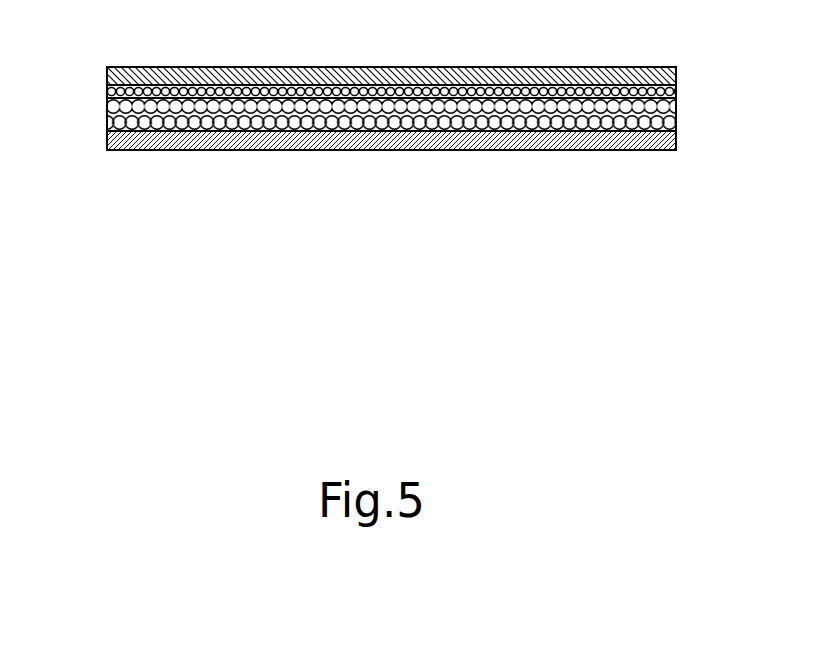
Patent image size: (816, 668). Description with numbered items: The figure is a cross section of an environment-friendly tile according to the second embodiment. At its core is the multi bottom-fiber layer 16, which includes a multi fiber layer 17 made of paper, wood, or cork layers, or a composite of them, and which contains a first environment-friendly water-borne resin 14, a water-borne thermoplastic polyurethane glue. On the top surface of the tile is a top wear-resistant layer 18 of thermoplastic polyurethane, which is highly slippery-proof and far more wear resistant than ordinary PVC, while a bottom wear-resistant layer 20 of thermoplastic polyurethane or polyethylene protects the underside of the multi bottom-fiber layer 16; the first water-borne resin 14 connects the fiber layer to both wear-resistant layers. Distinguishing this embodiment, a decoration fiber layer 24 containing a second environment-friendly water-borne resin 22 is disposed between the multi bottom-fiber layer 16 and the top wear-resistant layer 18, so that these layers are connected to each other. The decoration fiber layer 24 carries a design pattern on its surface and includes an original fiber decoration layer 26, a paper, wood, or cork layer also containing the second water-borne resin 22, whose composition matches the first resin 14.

The first environment-friendly water-borne resin 14 is at (140, 133).
The multi bottom-fiber layer 16 is at (104, 98).
The multi fiber layer 17 is at (247, 133).
The top wear-resistant layer 18 is at (233, 80).
The bottom wear-resistant layer 20 is at (622, 140).
The second environment-friendly water-borne resin 22 is at (420, 85).
The decoration fiber layer 24 is at (677, 90).
The original fiber decoration layer 26 is at (448, 87).